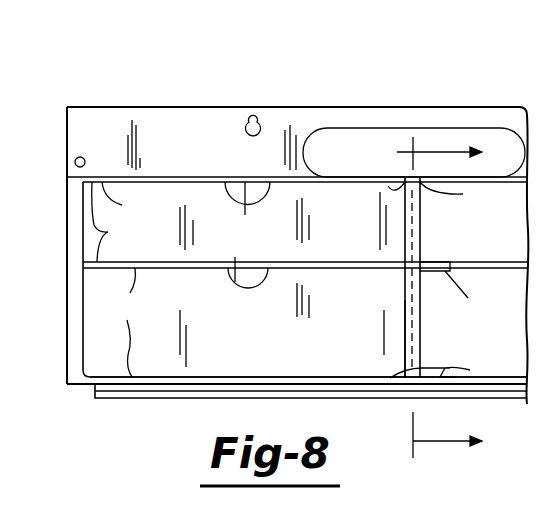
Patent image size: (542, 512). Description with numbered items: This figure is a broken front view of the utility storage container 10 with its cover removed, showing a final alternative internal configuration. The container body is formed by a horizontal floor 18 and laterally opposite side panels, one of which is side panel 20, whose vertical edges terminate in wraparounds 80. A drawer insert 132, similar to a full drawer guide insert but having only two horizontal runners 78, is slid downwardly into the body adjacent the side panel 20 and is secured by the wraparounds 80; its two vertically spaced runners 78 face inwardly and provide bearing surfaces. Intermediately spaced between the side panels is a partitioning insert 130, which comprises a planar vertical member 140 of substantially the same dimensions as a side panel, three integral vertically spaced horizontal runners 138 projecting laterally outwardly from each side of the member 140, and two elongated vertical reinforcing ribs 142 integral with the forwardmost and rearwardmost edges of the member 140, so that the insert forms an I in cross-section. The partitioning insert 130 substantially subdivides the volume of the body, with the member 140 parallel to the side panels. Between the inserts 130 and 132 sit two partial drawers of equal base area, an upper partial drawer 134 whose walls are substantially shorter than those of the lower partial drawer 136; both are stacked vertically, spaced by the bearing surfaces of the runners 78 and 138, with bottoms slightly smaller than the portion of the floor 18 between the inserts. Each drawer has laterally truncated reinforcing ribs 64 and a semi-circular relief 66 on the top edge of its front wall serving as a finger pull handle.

The utility storage container 10 is at (186, 96).
The wraparounds 80 is at (70, 215).
The side panel 20 is at (68, 322).
The floor 18 is at (203, 398).
The drawer insert 132 is at (139, 201).
The horizontal runners 78 is at (117, 222).
The reinforcing ribs 64 is at (131, 322).
The semi-circular relief 66 is at (247, 235).
The upper partial drawer 134 is at (364, 241).
The lower partial drawer 136 is at (310, 351).
The partitioning insert 130 is at (421, 222).
The planar vertical member 140 is at (430, 254).
The horizontal runners of partitioning insert 138 is at (455, 284).
The vertical reinforcing ribs 142 is at (420, 340).